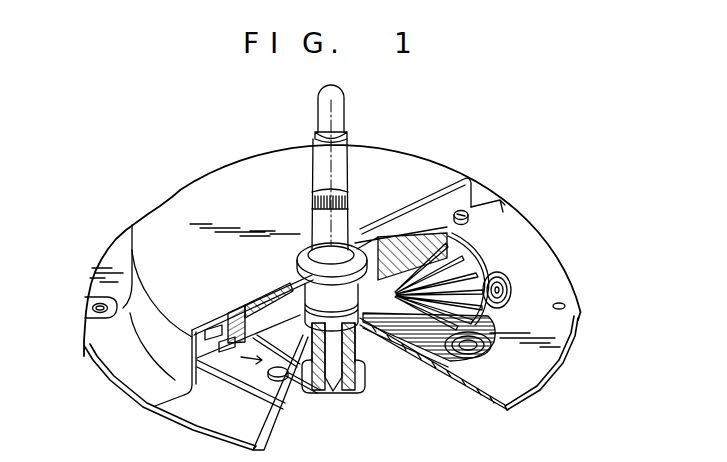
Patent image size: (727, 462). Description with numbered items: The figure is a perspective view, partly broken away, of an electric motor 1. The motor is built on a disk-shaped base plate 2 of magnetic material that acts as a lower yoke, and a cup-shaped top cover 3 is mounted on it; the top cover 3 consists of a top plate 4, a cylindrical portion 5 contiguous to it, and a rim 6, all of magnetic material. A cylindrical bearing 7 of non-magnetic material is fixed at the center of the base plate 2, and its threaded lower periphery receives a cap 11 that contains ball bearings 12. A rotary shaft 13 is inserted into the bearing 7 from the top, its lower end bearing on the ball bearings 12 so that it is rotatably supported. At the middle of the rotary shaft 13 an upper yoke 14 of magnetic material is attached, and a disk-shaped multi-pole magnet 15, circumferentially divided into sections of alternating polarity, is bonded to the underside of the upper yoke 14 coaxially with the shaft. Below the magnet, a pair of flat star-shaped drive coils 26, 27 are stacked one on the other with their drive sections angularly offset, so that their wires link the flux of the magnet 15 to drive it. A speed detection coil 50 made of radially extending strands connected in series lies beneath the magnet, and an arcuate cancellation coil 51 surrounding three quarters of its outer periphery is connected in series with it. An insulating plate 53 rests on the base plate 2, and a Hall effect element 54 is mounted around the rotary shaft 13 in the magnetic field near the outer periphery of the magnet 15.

The electric motor 1 is at (207, 187).
The base plate 2 is at (188, 417).
The top cover 3 is at (440, 161).
The top plate 4 is at (387, 163).
The cylindrical portion 5 is at (480, 193).
The rim 6 is at (113, 360).
The bearing 7 is at (357, 343).
The cap 11 is at (363, 380).
The ball bearings 12 is at (333, 389).
The rotary shaft 13 is at (335, 116).
The upper yoke 14 is at (400, 232).
The disk-shaped multi-pole magnet 15 is at (467, 238).
The drive coil 26 is at (477, 361).
The drive coil 27 is at (511, 284).
The speed detection coil 50 is at (483, 314).
The cancellation coil 51 is at (480, 264).
The insulating plate 53 is at (247, 395).
The Hall effect element 54 is at (301, 378).